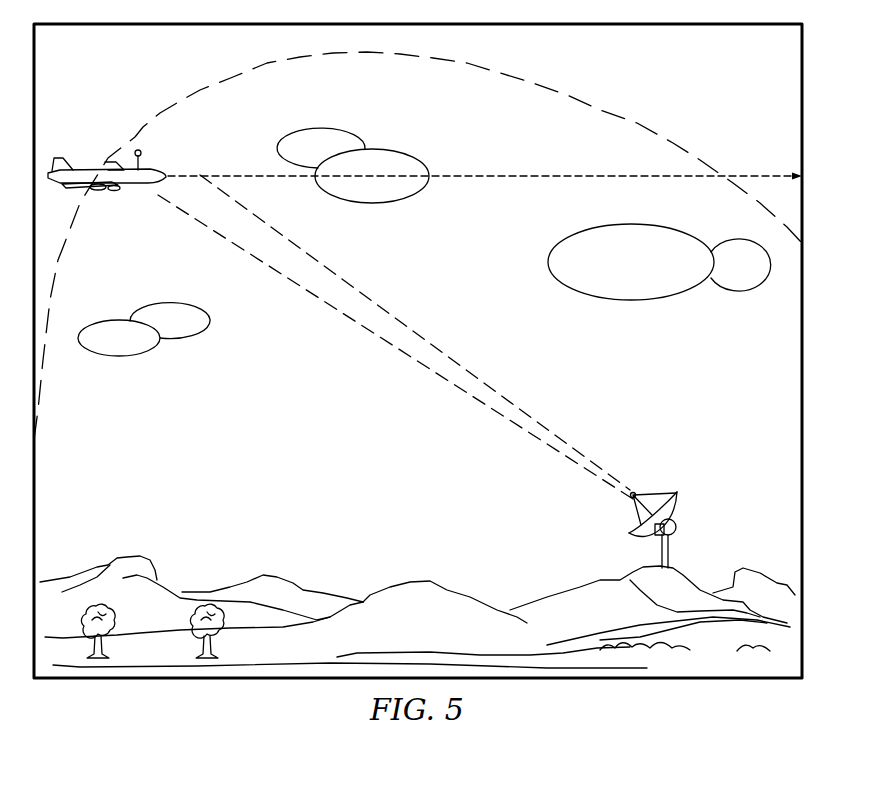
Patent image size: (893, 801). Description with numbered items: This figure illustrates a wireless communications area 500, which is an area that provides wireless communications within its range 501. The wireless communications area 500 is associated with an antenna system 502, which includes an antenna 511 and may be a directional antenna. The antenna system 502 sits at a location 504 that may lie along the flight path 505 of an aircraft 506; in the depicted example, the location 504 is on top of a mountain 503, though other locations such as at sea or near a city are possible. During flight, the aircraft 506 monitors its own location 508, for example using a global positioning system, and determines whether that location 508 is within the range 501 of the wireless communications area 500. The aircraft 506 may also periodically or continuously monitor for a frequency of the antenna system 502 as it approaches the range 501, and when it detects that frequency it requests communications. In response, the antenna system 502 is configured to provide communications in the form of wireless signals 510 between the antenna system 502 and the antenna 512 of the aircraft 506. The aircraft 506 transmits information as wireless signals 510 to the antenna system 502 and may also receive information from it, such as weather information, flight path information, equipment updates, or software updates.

The wireless communications area 500 is at (622, 147).
The range 501 is at (168, 104).
The antenna system 502 is at (635, 496).
The mountain 503 is at (636, 572).
The location 504 is at (670, 567).
The flight path 505 is at (537, 175).
The aircraft 506 is at (126, 191).
The location 508 is at (141, 212).
The wireless signals 510 is at (355, 288).
The antenna 511 is at (610, 525).
The antenna 512 is at (142, 152).